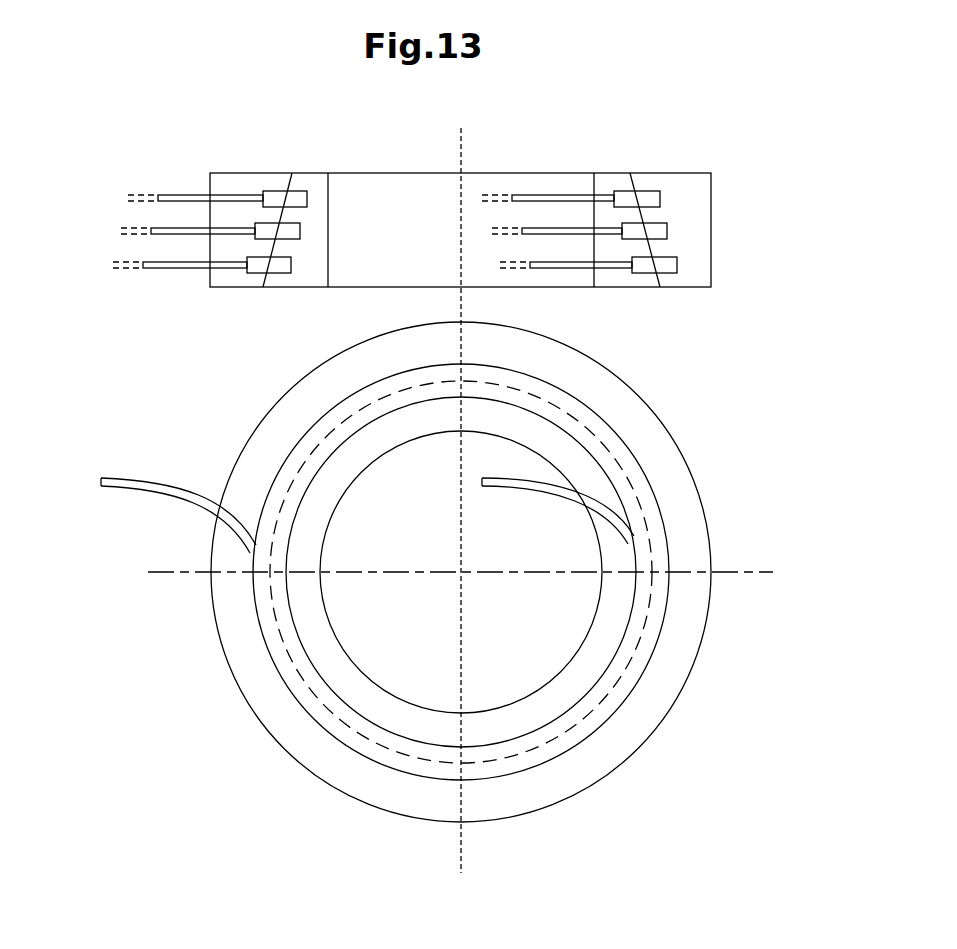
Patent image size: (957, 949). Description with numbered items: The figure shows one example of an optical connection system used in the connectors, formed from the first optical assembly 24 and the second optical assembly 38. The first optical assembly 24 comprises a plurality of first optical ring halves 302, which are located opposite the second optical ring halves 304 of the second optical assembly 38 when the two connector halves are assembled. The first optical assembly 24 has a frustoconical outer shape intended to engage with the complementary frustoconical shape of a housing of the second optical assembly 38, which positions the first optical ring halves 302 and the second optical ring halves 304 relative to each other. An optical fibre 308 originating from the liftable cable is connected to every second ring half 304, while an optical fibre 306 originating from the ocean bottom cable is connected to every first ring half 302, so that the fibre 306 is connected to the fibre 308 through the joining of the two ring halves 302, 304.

The first optical assembly 24 is at (305, 188).
The second optical assembly 38 is at (243, 191).
The first optical ring halves 302 is at (623, 198).
The second optical ring halves 304 is at (647, 197).
The optical fibre 306 is at (555, 195).
The optical fibre 308 is at (179, 195).